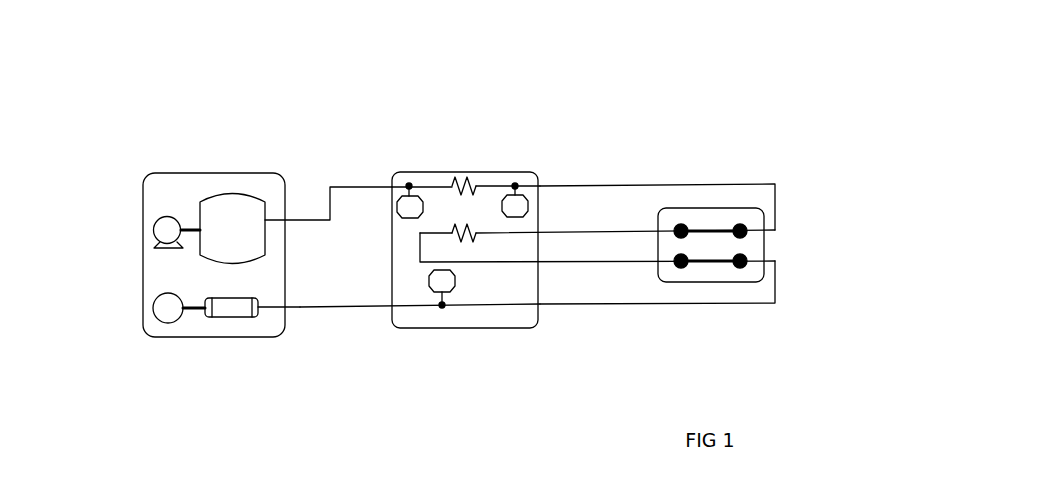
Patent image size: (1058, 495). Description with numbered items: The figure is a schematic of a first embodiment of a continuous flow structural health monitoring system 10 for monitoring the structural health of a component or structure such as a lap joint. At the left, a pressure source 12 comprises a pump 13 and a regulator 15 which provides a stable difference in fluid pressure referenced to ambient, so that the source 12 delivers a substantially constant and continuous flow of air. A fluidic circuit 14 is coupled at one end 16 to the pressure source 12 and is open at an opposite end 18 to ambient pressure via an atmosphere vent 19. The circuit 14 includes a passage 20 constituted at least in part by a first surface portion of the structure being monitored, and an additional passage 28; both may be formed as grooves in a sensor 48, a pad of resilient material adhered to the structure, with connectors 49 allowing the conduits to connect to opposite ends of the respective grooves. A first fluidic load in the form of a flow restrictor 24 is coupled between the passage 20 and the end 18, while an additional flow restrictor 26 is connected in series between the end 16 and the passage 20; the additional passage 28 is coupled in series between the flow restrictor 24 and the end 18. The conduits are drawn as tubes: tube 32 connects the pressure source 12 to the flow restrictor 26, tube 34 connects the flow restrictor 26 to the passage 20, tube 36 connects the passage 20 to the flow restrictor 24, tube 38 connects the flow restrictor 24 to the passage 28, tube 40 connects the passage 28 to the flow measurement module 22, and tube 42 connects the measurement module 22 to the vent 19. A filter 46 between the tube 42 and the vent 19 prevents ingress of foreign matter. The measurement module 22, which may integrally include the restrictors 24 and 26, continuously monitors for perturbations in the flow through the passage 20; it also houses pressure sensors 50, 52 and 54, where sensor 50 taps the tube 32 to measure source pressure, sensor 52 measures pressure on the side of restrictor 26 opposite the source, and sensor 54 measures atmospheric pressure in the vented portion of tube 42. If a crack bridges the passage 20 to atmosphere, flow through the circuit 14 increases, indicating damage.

The continuous flow structural health monitoring system 10 is at (800, 102).
The pressure source 12 is at (184, 241).
The pump 13 is at (178, 175).
The fluidic circuit 14 is at (747, 241).
The regulator 15 is at (238, 203).
The end of circuit 16 is at (298, 209).
The opposite end of circuit 18 is at (303, 307).
The atmosphere vent 19 is at (143, 315).
The passage 20 is at (710, 230).
The flow measurement module 22 is at (493, 217).
The flow restrictor 24 is at (473, 238).
The flow restrictor 26 is at (467, 177).
The additional passage 28 is at (713, 265).
The tube 32 is at (375, 186).
The tube 34 is at (633, 184).
The tube 36 is at (627, 232).
The tube 38 is at (608, 263).
The tube 40 is at (672, 303).
The tube 42 is at (360, 306).
The filter 46 is at (235, 316).
The sensor 48 is at (765, 245).
The connectors 49 is at (684, 220).
The pressure sensor 50 is at (423, 197).
The pressure sensor 52 is at (507, 218).
The pressure sensor 54 is at (427, 287).